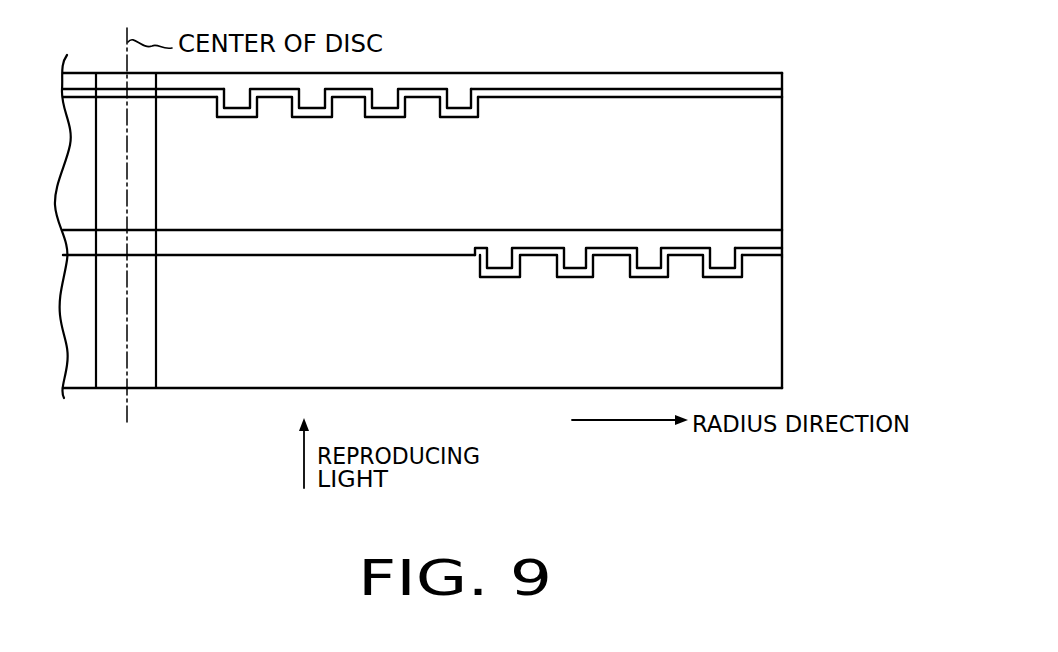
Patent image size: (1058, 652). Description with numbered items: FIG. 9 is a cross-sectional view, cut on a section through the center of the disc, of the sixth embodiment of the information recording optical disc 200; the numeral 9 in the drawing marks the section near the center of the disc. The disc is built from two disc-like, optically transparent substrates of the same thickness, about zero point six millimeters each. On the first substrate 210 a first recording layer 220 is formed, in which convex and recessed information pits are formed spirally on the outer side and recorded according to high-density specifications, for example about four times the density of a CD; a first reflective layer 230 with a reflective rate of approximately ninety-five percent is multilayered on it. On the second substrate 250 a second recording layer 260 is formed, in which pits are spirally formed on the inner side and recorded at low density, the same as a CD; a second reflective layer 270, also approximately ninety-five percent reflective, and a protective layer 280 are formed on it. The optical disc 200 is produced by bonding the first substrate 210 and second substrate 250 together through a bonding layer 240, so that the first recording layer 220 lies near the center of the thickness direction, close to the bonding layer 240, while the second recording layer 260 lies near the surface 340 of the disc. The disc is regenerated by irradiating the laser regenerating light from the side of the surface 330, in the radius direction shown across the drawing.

The clamping region boundary 9 is at (142, 375).
The optical disc 200 is at (603, 483).
The first substrate 210 is at (772, 348).
The first recording layer 220 is at (652, 278).
The first reflective layer 230 is at (775, 255).
The bonding layer 240 is at (772, 241).
The second substrate 250 is at (772, 155).
The second recording layer 260 is at (478, 118).
The second reflective layer 270 is at (783, 98).
The protective layer 280 is at (783, 87).
The surface 330 is at (235, 388).
The surface 340 is at (515, 72).